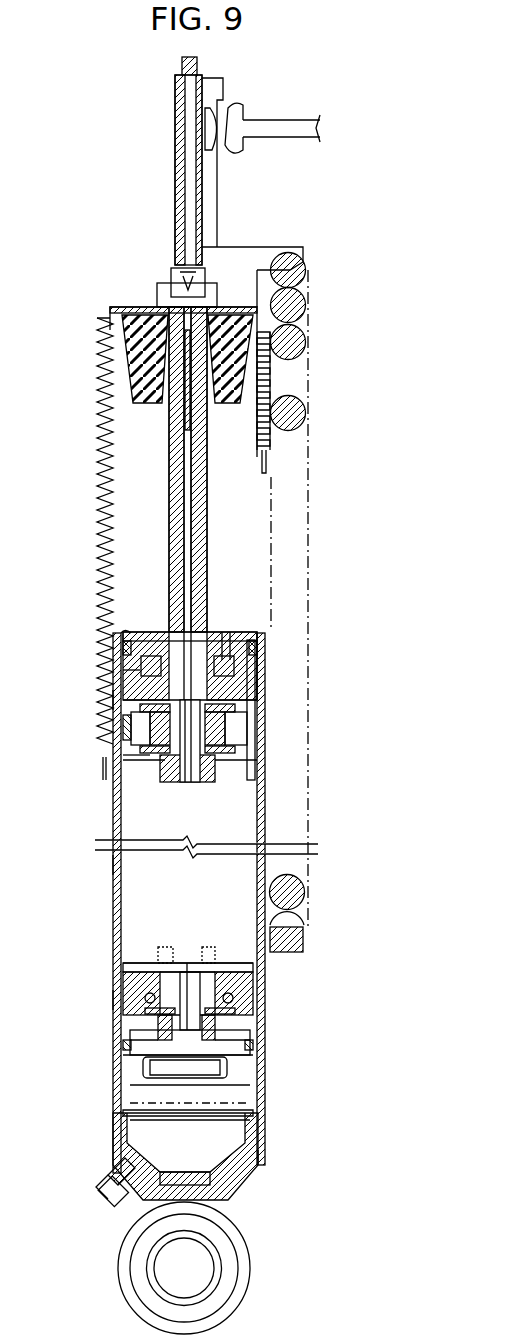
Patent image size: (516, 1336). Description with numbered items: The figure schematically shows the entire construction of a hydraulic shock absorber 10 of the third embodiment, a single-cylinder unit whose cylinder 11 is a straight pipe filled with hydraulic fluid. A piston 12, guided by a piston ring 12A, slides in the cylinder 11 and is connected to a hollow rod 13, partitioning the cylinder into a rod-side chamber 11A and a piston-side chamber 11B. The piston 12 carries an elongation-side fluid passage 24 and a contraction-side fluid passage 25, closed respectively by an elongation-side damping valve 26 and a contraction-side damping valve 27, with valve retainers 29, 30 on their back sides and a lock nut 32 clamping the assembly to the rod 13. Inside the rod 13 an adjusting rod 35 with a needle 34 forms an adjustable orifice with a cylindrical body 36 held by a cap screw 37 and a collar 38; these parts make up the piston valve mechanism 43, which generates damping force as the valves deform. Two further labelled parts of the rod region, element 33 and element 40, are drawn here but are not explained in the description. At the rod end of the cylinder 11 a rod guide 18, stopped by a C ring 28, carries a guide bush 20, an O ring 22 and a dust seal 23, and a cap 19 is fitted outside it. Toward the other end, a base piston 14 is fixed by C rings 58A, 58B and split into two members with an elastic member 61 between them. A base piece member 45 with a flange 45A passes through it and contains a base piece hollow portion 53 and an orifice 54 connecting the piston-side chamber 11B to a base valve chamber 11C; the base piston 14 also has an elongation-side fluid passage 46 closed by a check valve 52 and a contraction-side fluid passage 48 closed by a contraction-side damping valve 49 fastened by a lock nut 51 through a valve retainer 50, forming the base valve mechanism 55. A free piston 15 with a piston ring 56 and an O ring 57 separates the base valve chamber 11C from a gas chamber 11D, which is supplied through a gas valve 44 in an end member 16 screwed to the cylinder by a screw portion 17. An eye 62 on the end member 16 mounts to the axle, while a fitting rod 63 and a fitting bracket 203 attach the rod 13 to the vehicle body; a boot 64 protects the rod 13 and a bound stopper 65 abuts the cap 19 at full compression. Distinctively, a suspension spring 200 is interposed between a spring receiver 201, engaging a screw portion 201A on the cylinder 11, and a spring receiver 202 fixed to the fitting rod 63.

The hydraulic shock absorber 10 is at (330, 528).
The cylinder 11 is at (113, 820).
The rod-side chamber 11A is at (113, 700).
The piston-side chamber 11B is at (113, 865).
The base valve chamber 11C is at (113, 1000).
The gas chamber 11D is at (255, 1170).
The piston 12 is at (262, 770).
The piston ring 12A is at (258, 748).
The rod 13 is at (203, 511).
The base piston 14 is at (253, 985).
The free piston 15 is at (125, 1128).
The end member 16 is at (240, 1185).
The screw portion 17 is at (140, 1122).
The rod guide 18 is at (262, 634).
The cap 19 is at (125, 630).
The guide bush 20 is at (121, 655).
The O ring 22 is at (258, 700).
The dust seal 23 is at (226, 632).
The elongation-side fluid passage 24 is at (248, 742).
The contraction-side fluid passage 25 is at (123, 760).
The elongation-side damping valve 26 is at (258, 780).
The contraction-side damping valve 27 is at (123, 672).
The C ring 28 is at (258, 660).
The valve retainer 29 is at (150, 770).
The valve retainer 30 is at (248, 725).
The lock nut 32 is at (212, 770).
The control rod 33 is at (186, 540).
The needle 34 is at (262, 634).
The adjusting rod 35 is at (188, 488).
The cylindrical body 36 is at (123, 722).
The cap screw 37 is at (187, 785).
The collar 38 is at (262, 760).
The damping force generating mechanism 40 is at (258, 708).
The piston valve mechanism 43 is at (387, 727).
The gas valve 44 is at (122, 1210).
The base piece member 45 is at (125, 963).
The flange 45A is at (210, 947).
The elongation-side fluid passage 46 is at (145, 1000).
The contraction-side fluid passage 48 is at (253, 1010).
The contraction-side damping valve 49 is at (250, 1035).
The valve retainer 50 is at (228, 1068).
The lock nut 51 is at (150, 1085).
The check valve 52 is at (150, 1032).
The base piece hollow portion 53 is at (187, 962).
The orifice 54 is at (103, 1188).
The base valve mechanism 55 is at (389, 1010).
The piston ring 56 is at (150, 1062).
The O ring 57 is at (250, 1050).
The C ring 58A is at (123, 1022).
The C ring 58B is at (123, 1003).
The elastic member 61 is at (253, 968).
The eye 62 is at (250, 1258).
The fitting rod 63 is at (176, 247).
The boot 64 is at (100, 512).
The bound stopper 65 is at (262, 385).
The suspension spring 200 is at (300, 418).
The spring receiver 201 is at (303, 928).
The screw portion 201A is at (303, 945).
The spring receiver 202 is at (285, 262).
The fitting bracket 203 is at (322, 128).